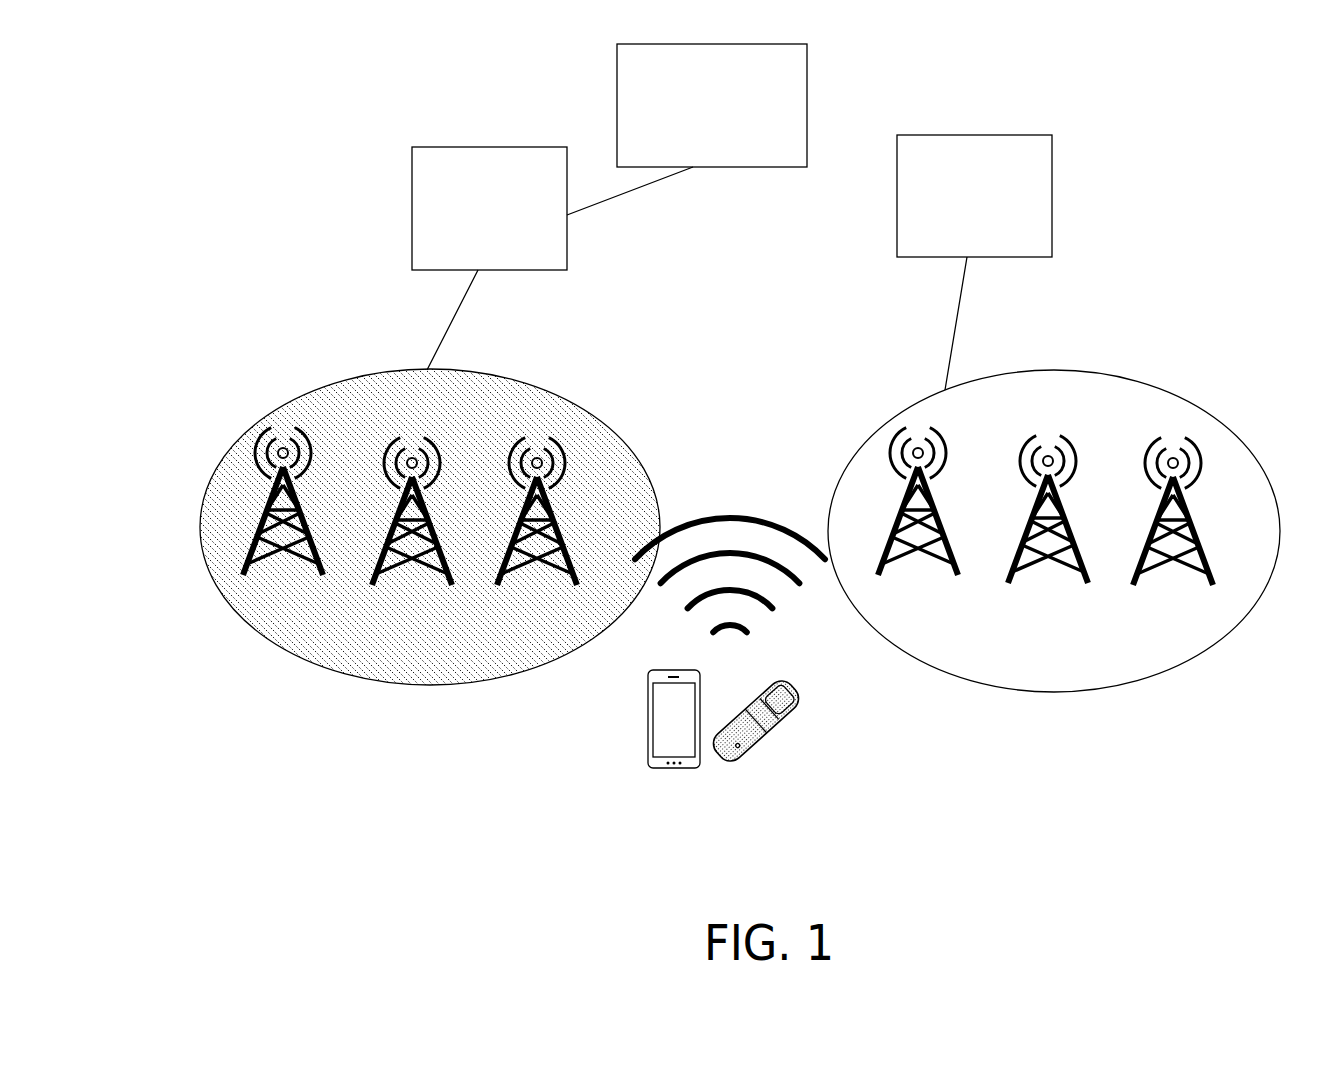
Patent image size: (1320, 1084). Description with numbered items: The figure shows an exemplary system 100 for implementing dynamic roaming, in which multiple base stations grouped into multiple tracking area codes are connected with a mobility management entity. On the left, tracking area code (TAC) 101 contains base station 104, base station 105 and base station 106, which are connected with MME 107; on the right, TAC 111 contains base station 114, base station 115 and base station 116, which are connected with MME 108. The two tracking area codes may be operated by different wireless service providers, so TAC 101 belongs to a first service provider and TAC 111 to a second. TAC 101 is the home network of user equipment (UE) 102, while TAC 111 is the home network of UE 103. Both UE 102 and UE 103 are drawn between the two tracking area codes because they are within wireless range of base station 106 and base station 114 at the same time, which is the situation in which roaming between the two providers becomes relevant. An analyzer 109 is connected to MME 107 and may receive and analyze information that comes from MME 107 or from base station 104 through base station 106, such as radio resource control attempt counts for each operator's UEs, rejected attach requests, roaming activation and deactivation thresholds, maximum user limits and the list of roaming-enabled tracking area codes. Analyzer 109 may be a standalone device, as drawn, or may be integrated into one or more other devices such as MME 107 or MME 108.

The system 100 is at (338, 128).
The tracking area code (TAC) 101 is at (201, 523).
The user equipment (UE) 102 is at (674, 735).
The user equipment (UE) 103 is at (756, 737).
The base station 104 is at (283, 516).
The base station 105 is at (412, 526).
The base station 106 is at (537, 526).
The MME 107 is at (470, 234).
The MME 108 is at (955, 221).
The analyzer 109 is at (693, 131).
The tracking area code (TAC) 111 is at (1243, 440).
The base station 114 is at (918, 516).
The base station 115 is at (1048, 525).
The base station 116 is at (1173, 527).